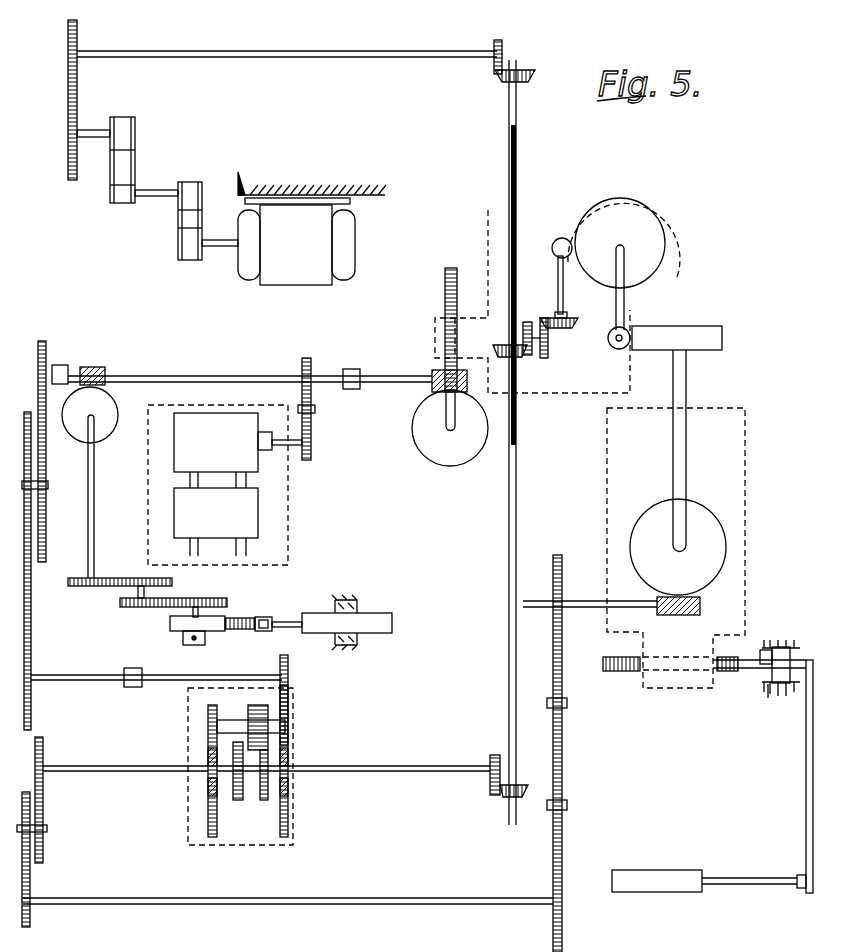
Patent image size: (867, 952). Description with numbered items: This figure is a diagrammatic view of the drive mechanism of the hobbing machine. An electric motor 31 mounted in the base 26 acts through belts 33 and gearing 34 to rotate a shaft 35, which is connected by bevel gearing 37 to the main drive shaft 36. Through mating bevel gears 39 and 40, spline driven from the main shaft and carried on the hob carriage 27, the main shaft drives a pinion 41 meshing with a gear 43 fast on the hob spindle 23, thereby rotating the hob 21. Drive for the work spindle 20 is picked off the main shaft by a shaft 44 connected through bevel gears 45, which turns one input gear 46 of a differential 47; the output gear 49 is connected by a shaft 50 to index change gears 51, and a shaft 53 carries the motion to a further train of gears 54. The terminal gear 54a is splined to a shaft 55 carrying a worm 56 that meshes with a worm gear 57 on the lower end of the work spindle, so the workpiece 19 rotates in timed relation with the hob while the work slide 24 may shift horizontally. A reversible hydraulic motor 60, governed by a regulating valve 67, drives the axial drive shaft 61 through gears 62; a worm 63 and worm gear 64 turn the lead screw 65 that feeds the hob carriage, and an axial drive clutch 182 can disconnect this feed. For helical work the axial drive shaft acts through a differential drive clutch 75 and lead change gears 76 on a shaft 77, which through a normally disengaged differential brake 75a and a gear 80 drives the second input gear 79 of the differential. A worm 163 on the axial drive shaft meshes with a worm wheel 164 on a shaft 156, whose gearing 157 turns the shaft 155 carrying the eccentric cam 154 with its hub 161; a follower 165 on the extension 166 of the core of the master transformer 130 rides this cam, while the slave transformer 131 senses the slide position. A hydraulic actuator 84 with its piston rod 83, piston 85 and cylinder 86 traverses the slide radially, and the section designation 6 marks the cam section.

The section line 6 is at (160, 633).
The workpiece 19 is at (722, 336).
The work spindle 20 is at (680, 448).
The hob 21 is at (618, 350).
The hob spindle 23 is at (626, 275).
The work slide 24 is at (760, 430).
The base 26 is at (325, 170).
The hob carriage 27 is at (486, 215).
The electric motor 31 is at (288, 272).
The belts 33 is at (185, 220).
The gearing 34 is at (82, 102).
The shaft 35 is at (396, 58).
The main drive shaft 36 is at (509, 120).
The bevel gearing 37 is at (505, 72).
The bevel gears 39 is at (500, 340).
The bevel gears 40 is at (550, 340).
The pinion 41 is at (556, 244).
The gear 43 is at (665, 236).
The shaft 44 is at (404, 766).
The bevel gears 45 is at (492, 790).
The input gear 46 is at (262, 805).
The differential 47 is at (185, 729).
The output gear 49 is at (236, 800).
The shaft 50 is at (124, 772).
The index change gears 51 is at (46, 802).
The shaft 53 is at (364, 900).
The train of gears 54 is at (566, 776).
The terminal gear 54a is at (562, 556).
The shaft 55 is at (632, 601).
The worm 56 is at (682, 615).
The worm gear 57 is at (715, 515).
The hydraulic motor 60 is at (232, 412).
The axial drive shaft 61 is at (155, 375).
The gears 62 is at (314, 428).
The worm 63 is at (434, 372).
The worm gear 64 is at (438, 462).
The lead screw 65 is at (445, 288).
The regulating valve 67 is at (258, 520).
The differential drive clutch 75 is at (60, 364).
The differential brake 75a is at (130, 688).
The lead change gears 76 is at (22, 400).
The shaft 77 is at (88, 672).
The second input gear 79 is at (290, 810).
The gear 80 is at (290, 683).
The piston rod 83 is at (724, 672).
The hydraulic actuator 84 is at (790, 640).
The piston 85 is at (772, 700).
The cylinder 86 is at (765, 650).
The master transformer 130 is at (382, 612).
The slave transformer 131 is at (638, 892).
The cam 154 is at (220, 632).
The shaft 155 is at (170, 612).
The shaft 156 is at (94, 498).
The gearing 157 is at (130, 575).
The hub 161 is at (190, 646).
The worm 163 is at (96, 366).
The worm wheel 164 is at (112, 436).
The follower 165 is at (262, 616).
The extension 166 is at (292, 620).
The axial drive clutch 182 is at (352, 368).